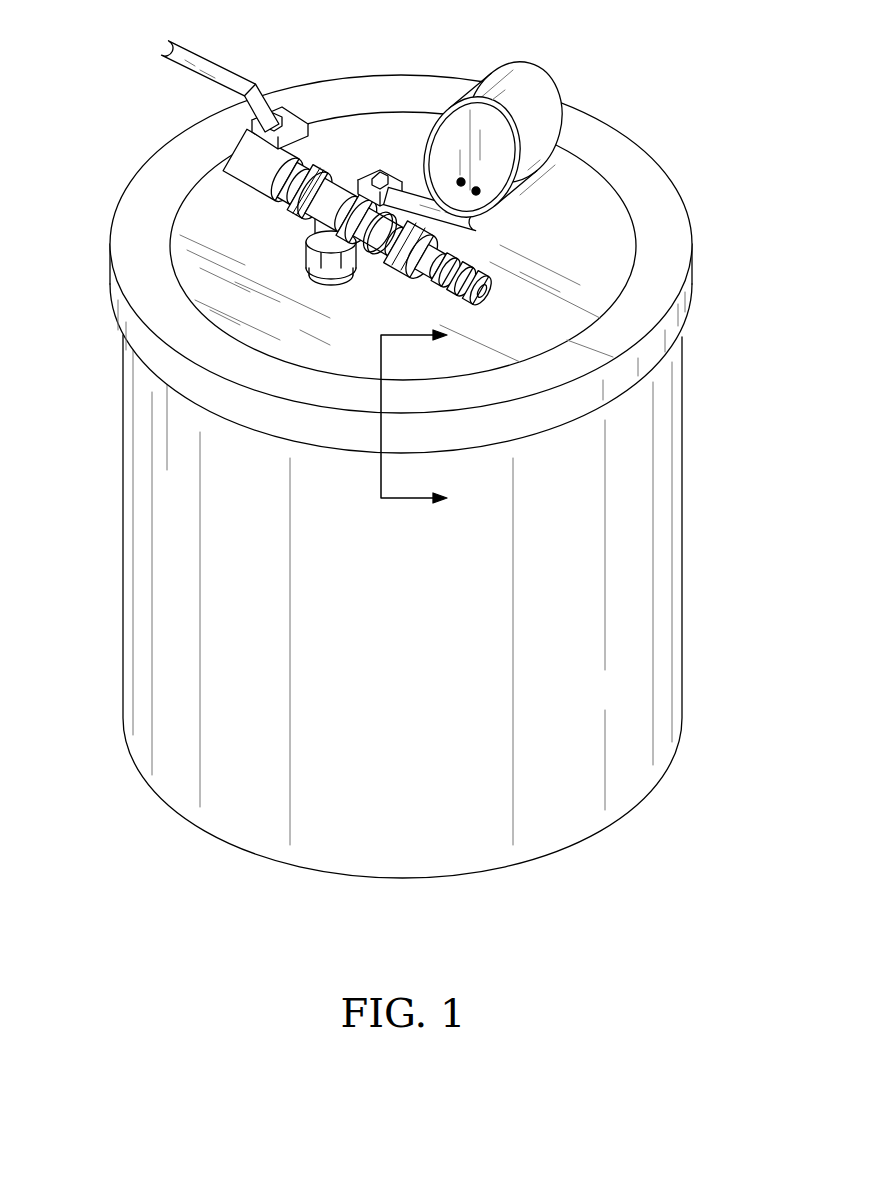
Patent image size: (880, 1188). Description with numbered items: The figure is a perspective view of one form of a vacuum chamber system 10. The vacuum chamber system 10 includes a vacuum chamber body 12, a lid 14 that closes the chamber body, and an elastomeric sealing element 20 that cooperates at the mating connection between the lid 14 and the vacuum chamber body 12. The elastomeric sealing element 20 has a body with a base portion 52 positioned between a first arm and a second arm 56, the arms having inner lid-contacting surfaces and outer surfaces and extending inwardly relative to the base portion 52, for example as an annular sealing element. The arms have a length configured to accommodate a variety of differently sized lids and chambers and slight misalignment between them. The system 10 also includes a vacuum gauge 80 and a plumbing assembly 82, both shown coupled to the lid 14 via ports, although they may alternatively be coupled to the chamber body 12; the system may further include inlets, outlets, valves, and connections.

The vacuum chamber system 10 is at (426, 453).
The vacuum chamber body 12 is at (663, 605).
The lid 14 is at (205, 221).
The elastomeric sealing element 20 is at (404, 241).
The base portion 52 is at (690, 312).
The second arm 56 is at (351, 205).
The vacuum gauge 80 is at (497, 85).
The plumbing assembly 82 is at (335, 183).